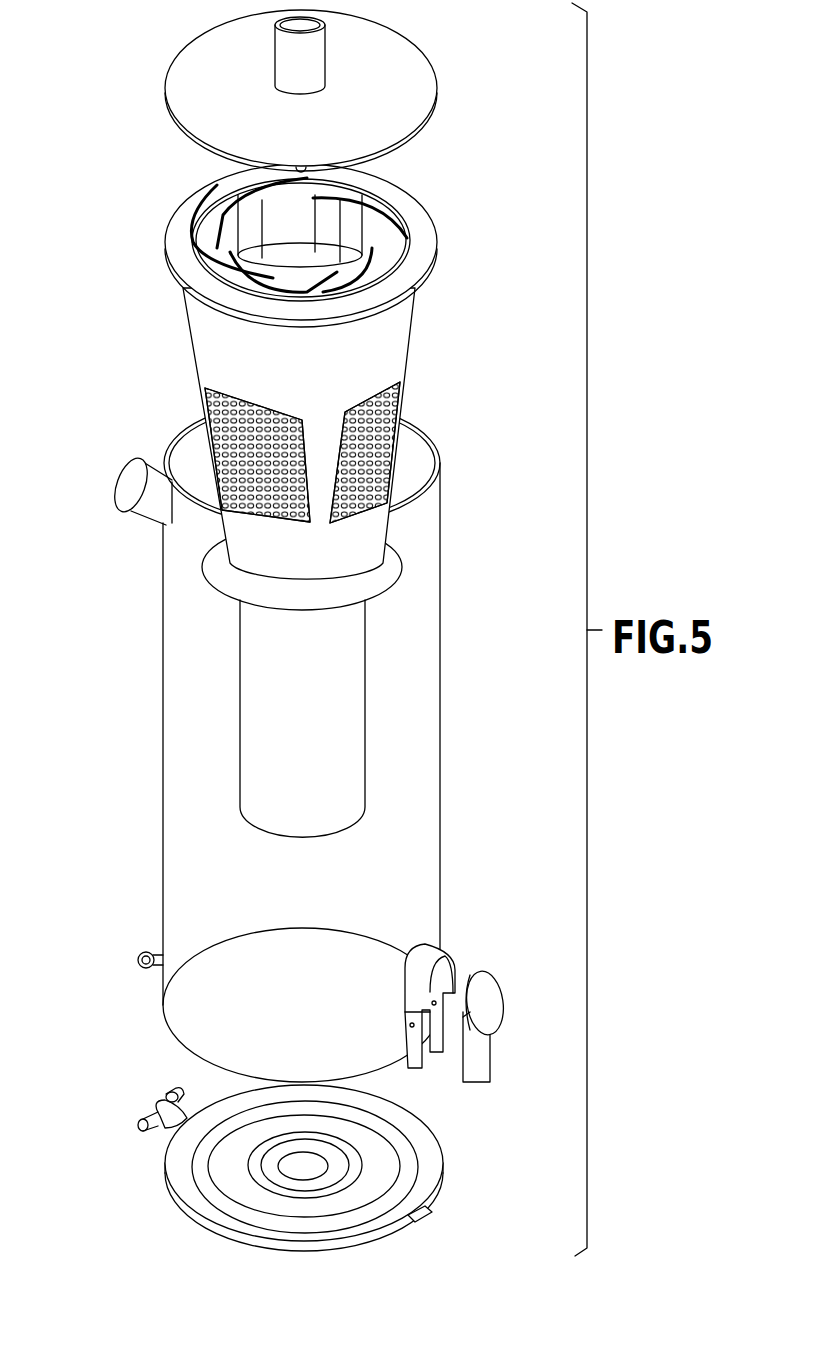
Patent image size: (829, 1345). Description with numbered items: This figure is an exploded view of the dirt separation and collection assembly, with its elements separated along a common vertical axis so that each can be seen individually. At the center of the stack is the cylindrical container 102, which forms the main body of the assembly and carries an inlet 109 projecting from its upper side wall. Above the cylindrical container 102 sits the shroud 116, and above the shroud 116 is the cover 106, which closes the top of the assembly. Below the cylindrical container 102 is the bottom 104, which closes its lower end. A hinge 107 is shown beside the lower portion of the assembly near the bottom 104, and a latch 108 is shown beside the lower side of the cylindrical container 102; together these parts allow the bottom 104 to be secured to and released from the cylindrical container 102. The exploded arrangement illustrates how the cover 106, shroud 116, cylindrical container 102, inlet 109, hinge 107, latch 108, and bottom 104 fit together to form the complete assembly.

The cylindrical container 102 is at (452, 770).
The bottom 104 is at (432, 1212).
The cover 106 is at (412, 82).
The hinge 107 is at (150, 1108).
The latch 108 is at (495, 1003).
The inlet 109 is at (150, 505).
The shroud 116 is at (390, 333).